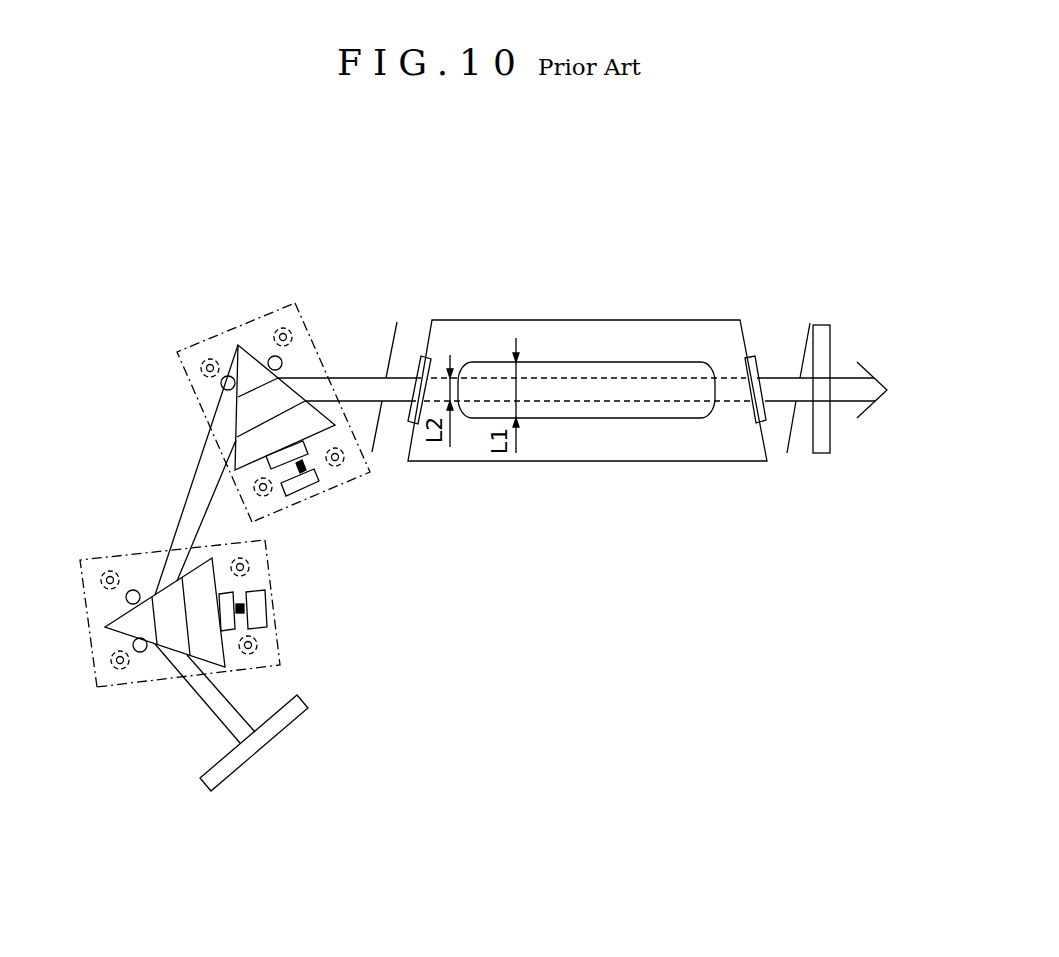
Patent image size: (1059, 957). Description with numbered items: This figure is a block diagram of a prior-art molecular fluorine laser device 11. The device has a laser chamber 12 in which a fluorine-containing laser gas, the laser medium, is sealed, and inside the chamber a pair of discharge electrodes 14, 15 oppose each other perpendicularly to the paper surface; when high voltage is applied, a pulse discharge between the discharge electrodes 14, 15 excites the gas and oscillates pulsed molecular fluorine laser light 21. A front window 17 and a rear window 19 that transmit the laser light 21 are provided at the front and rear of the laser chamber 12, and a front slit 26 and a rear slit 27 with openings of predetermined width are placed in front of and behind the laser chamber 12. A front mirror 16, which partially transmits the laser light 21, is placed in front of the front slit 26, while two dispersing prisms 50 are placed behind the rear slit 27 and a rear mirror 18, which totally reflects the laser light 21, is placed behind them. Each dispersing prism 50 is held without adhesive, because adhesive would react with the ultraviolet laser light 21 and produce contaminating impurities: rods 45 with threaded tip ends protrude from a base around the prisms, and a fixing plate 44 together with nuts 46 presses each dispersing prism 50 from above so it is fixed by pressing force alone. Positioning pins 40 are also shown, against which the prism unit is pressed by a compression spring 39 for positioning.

The molecular fluorine laser device 11 is at (803, 270).
The laser chamber 12 is at (673, 318).
The discharge electrode 14 is at (586, 330).
The discharge electrode 15 is at (573, 362).
The front mirror 16 is at (821, 453).
The front window 17 is at (751, 357).
The rear mirror 18 is at (273, 738).
The rear window 19 is at (414, 355).
The molecular fluorine laser light 21 is at (852, 403).
The front slit 26 is at (797, 437).
The rear slit 27 is at (379, 440).
The compression spring 39 is at (262, 596).
The positioning pin 40 is at (268, 357).
The fixing plate 44 is at (226, 476).
The rod 45 is at (308, 330).
The nut 46 is at (281, 327).
The dispersing prism 50 is at (236, 357).